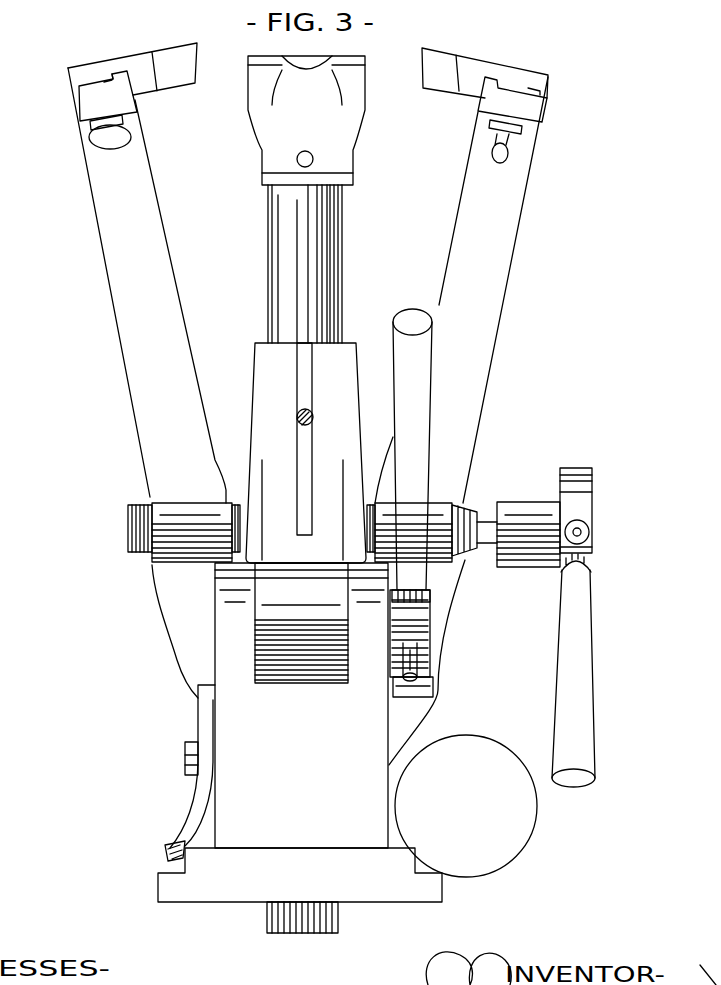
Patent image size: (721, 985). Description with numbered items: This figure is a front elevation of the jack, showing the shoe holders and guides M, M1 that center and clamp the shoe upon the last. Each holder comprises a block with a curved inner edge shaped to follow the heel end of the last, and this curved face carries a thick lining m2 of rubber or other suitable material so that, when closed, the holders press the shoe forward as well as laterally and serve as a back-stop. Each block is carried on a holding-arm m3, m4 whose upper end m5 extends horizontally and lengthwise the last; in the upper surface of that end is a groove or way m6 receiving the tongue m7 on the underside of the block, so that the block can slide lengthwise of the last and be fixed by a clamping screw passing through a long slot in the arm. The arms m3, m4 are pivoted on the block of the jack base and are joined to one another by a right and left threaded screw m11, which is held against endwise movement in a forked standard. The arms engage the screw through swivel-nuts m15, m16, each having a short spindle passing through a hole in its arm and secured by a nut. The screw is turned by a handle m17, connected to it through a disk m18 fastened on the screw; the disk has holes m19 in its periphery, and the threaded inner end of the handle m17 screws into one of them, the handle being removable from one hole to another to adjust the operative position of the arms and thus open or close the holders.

The shoe holder and guide M is at (132, 69).
The shoe holder and guide M1 is at (485, 73).
The lining m2 is at (507, 84).
The holding-arm m3 is at (147, 285).
The holding-arm m4 is at (431, 451).
The upper end of the arm m5 is at (313, 117).
The groove or way m6 is at (528, 90).
The tongue m7 is at (107, 84).
The right and left threaded screw m11 is at (467, 553).
The swivel-nut m15 is at (178, 530).
The swivel-nut m16 is at (438, 510).
The handle m17 is at (591, 700).
The disk m18 is at (584, 503).
The holes m19 is at (583, 532).